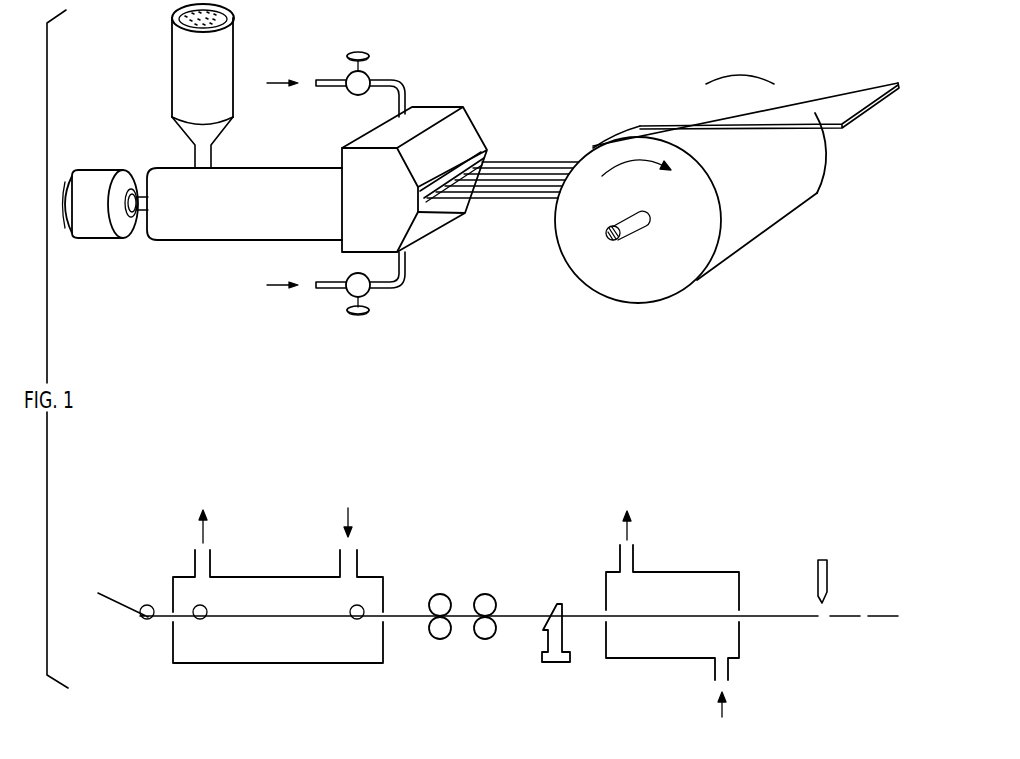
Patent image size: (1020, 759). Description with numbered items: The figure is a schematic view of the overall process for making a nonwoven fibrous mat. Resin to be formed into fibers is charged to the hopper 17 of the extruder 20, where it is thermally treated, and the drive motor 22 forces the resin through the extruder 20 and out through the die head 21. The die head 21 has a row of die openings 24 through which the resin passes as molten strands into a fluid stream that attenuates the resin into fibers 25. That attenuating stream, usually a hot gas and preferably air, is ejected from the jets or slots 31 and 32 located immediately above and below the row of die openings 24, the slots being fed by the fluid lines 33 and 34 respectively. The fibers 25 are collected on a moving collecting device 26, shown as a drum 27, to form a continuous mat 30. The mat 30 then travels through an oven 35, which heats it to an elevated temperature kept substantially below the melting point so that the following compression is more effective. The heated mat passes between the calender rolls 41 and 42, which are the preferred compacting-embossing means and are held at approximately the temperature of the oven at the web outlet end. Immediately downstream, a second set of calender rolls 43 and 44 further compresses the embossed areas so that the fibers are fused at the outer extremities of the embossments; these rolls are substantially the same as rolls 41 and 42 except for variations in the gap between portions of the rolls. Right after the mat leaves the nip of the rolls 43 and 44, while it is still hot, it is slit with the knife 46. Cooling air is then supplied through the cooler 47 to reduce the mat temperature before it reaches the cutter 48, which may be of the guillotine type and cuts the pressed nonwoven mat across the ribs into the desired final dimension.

The hopper 17 is at (183, 80).
The extruder 20 is at (248, 178).
The die head 21 is at (461, 89).
The drive motor 22 is at (98, 178).
The die openings 24 is at (485, 158).
The fibers 25 is at (537, 154).
The moving collecting device 26 is at (658, 90).
The drum 27 is at (608, 283).
The continuous mat 30 is at (820, 93).
The jet or slot 31 is at (456, 164).
The jet or slot 32 is at (430, 204).
The fluid line 33 is at (387, 78).
The fluid line 34 is at (400, 287).
The oven 35 is at (257, 576).
The calender roll 41 is at (437, 594).
The calender roll 42 is at (437, 640).
The calender roll 43 is at (482, 594).
The calender roll 44 is at (486, 640).
The knife 46 is at (555, 608).
The cooler 47 is at (667, 571).
The cutter 48 is at (828, 574).